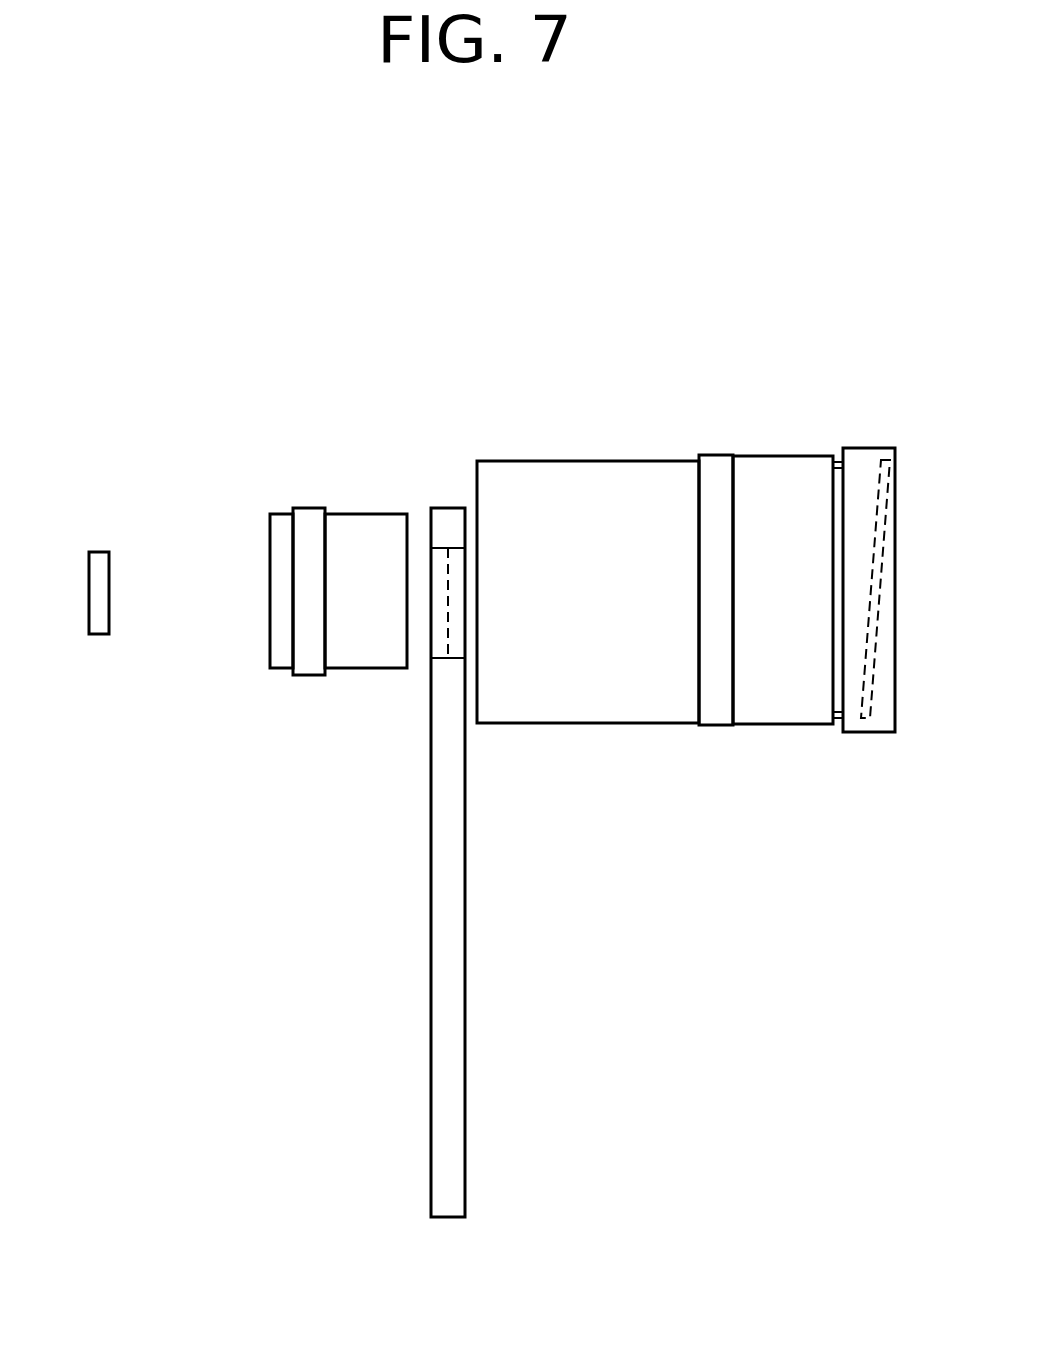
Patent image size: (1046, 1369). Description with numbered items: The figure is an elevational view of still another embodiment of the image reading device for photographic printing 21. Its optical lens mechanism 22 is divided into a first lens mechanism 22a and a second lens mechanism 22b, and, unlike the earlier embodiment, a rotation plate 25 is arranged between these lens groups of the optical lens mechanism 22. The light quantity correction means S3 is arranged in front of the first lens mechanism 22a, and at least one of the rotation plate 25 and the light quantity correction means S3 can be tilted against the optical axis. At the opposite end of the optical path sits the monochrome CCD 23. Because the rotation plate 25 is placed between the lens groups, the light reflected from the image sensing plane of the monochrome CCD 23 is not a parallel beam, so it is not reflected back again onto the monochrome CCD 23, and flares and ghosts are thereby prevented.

The image reading device for photographic printing 21 is at (421, 374).
The optical lens mechanism 22 is at (690, 333).
The first lens mechanism 22a is at (607, 483).
The second lens mechanism 22b is at (367, 537).
The monochrome CCD 23 is at (99, 567).
The rotation plate 25 is at (442, 953).
The light quantity correction means S3 is at (870, 474).